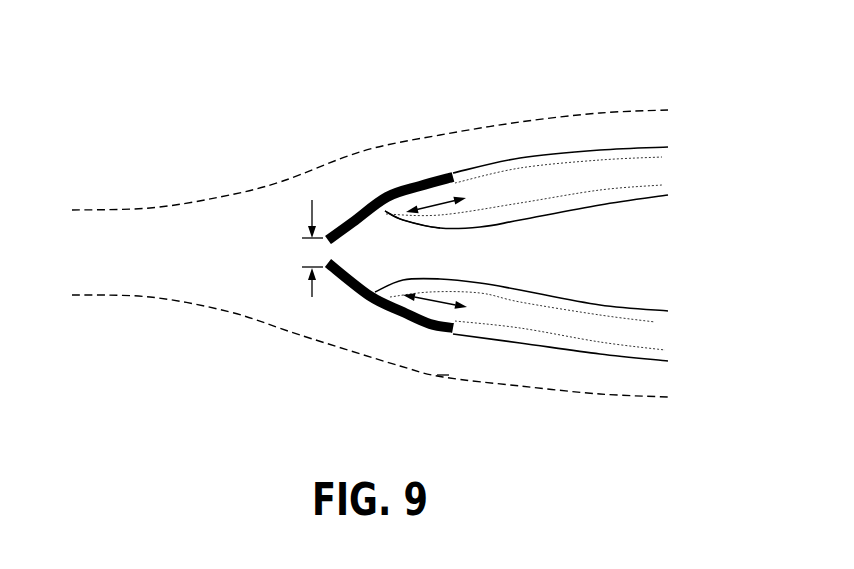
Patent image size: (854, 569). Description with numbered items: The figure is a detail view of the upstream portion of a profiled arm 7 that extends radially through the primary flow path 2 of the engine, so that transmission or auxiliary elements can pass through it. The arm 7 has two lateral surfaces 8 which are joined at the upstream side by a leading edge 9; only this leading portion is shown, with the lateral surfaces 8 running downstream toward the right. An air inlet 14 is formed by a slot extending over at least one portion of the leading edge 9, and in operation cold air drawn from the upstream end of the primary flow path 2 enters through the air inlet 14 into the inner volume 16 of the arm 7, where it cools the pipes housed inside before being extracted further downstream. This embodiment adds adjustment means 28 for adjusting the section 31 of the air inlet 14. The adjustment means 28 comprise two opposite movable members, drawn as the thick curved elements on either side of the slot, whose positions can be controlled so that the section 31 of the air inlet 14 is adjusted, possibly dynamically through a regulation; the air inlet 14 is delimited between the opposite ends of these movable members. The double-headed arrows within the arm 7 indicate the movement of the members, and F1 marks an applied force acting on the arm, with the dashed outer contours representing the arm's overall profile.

The primary flow path 2 is at (726, 84).
The arm 7 is at (585, 117).
The lateral surfaces 8 is at (637, 170).
The leading edge 9 is at (390, 203).
The air inlet 14 is at (303, 253).
The inner volume 16 is at (645, 264).
The adjustment means 28 is at (352, 217).
The section of the air inlet 31 is at (312, 297).
The force F1 is at (442, 375).